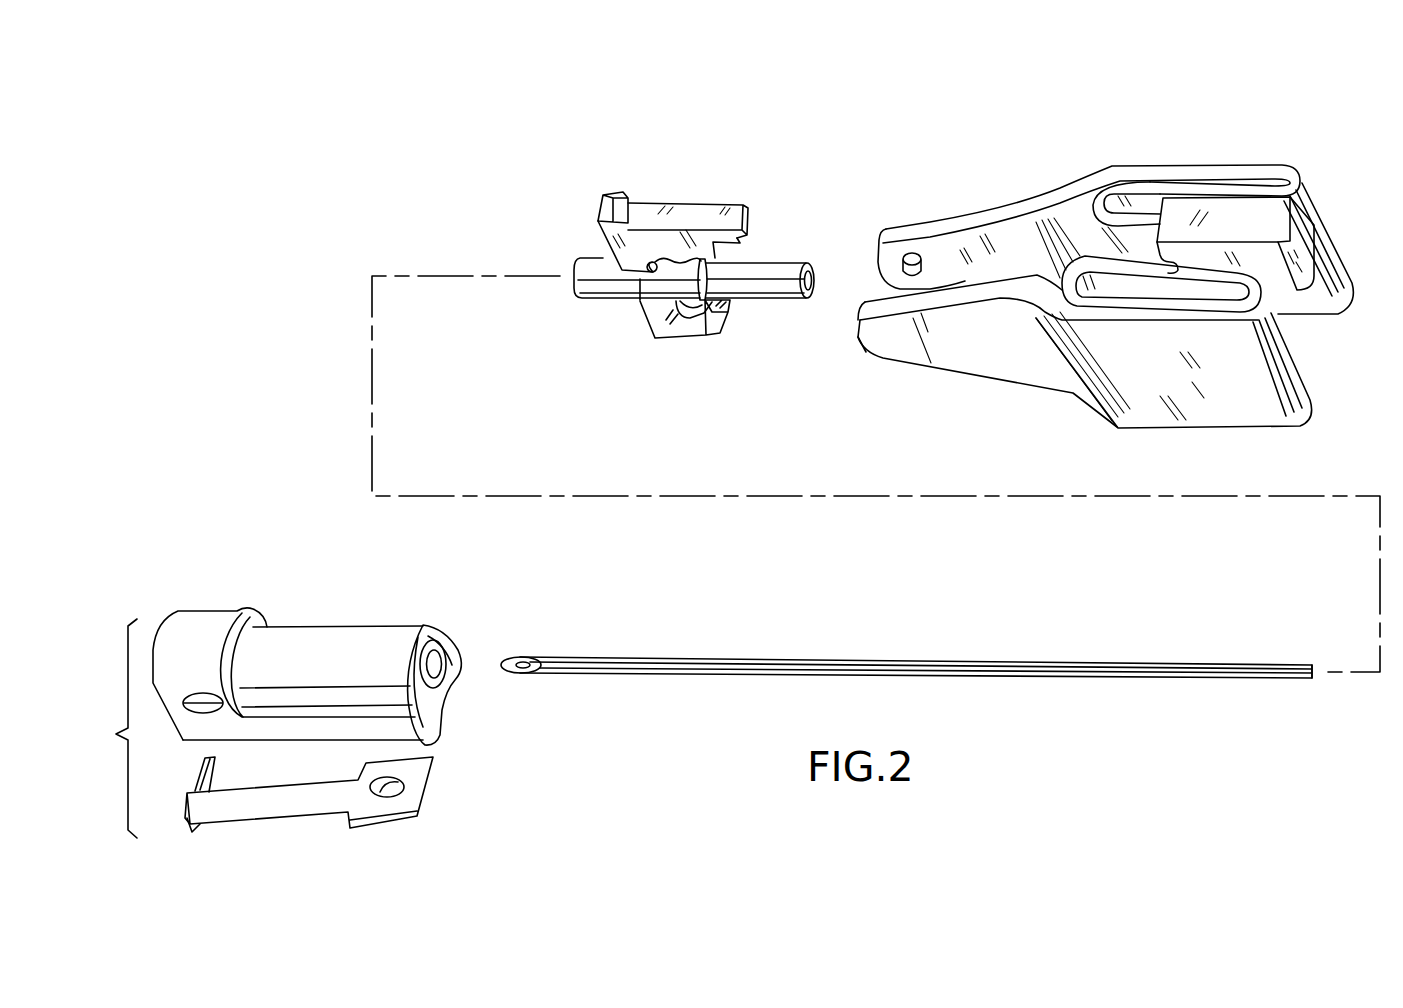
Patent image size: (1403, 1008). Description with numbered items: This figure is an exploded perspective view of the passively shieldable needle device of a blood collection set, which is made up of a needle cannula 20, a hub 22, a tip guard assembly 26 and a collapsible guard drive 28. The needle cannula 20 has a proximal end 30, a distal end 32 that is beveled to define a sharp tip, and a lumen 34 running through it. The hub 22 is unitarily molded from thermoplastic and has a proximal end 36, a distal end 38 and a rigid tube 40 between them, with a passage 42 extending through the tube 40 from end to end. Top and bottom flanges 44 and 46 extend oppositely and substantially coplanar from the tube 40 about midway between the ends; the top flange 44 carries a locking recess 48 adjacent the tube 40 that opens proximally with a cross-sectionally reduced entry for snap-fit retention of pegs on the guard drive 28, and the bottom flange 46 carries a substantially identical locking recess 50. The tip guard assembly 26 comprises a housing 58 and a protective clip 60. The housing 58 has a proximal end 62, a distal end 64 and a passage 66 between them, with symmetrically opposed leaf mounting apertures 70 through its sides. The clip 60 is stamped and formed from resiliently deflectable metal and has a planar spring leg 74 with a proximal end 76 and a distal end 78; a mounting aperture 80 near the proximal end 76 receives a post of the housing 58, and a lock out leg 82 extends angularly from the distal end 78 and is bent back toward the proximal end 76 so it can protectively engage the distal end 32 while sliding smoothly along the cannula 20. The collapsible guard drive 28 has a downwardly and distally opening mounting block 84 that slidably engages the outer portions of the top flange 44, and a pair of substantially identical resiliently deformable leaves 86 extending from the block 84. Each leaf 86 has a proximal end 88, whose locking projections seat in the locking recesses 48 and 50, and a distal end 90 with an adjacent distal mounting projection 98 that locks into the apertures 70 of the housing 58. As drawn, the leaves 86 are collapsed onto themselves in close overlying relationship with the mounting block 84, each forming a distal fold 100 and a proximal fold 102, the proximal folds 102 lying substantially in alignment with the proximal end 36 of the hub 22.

The needle cannula 20 is at (924, 660).
The hub 22 is at (701, 248).
The tip guard assembly 26 is at (283, 709).
The collapsible guard drive 28 is at (1119, 265).
The proximal end 30 is at (1316, 676).
The distal end 32 is at (510, 672).
The lumen 34 is at (524, 662).
The proximal end 36 is at (775, 281).
The distal end 38 is at (582, 290).
The rigid tube 40 is at (758, 293).
The passage 42 is at (812, 285).
The top flange 44 is at (690, 206).
The bottom flange 46 is at (670, 340).
The locking recess 48 is at (650, 268).
The locking recess 50 is at (698, 320).
The housing 58 is at (309, 640).
The protective clip 60 is at (311, 815).
The proximal end 62 is at (444, 660).
The distal end 64 is at (163, 626).
The passage 66 is at (440, 670).
The leaf mounting apertures 70 is at (200, 705).
The spring leg 74 is at (243, 808).
The proximal end 76 is at (424, 776).
The distal end 78 is at (200, 826).
The mounting aperture 80 is at (387, 796).
The lock out leg 82 is at (197, 786).
The mounting block 84 is at (1238, 208).
The leaves 86 is at (976, 203).
The proximal end 88 is at (1148, 216).
The distal end 90 is at (878, 238).
The distal mounting projection 98 is at (912, 254).
The distal fold 100 is at (1088, 212).
The proximal fold 102 is at (1325, 252).